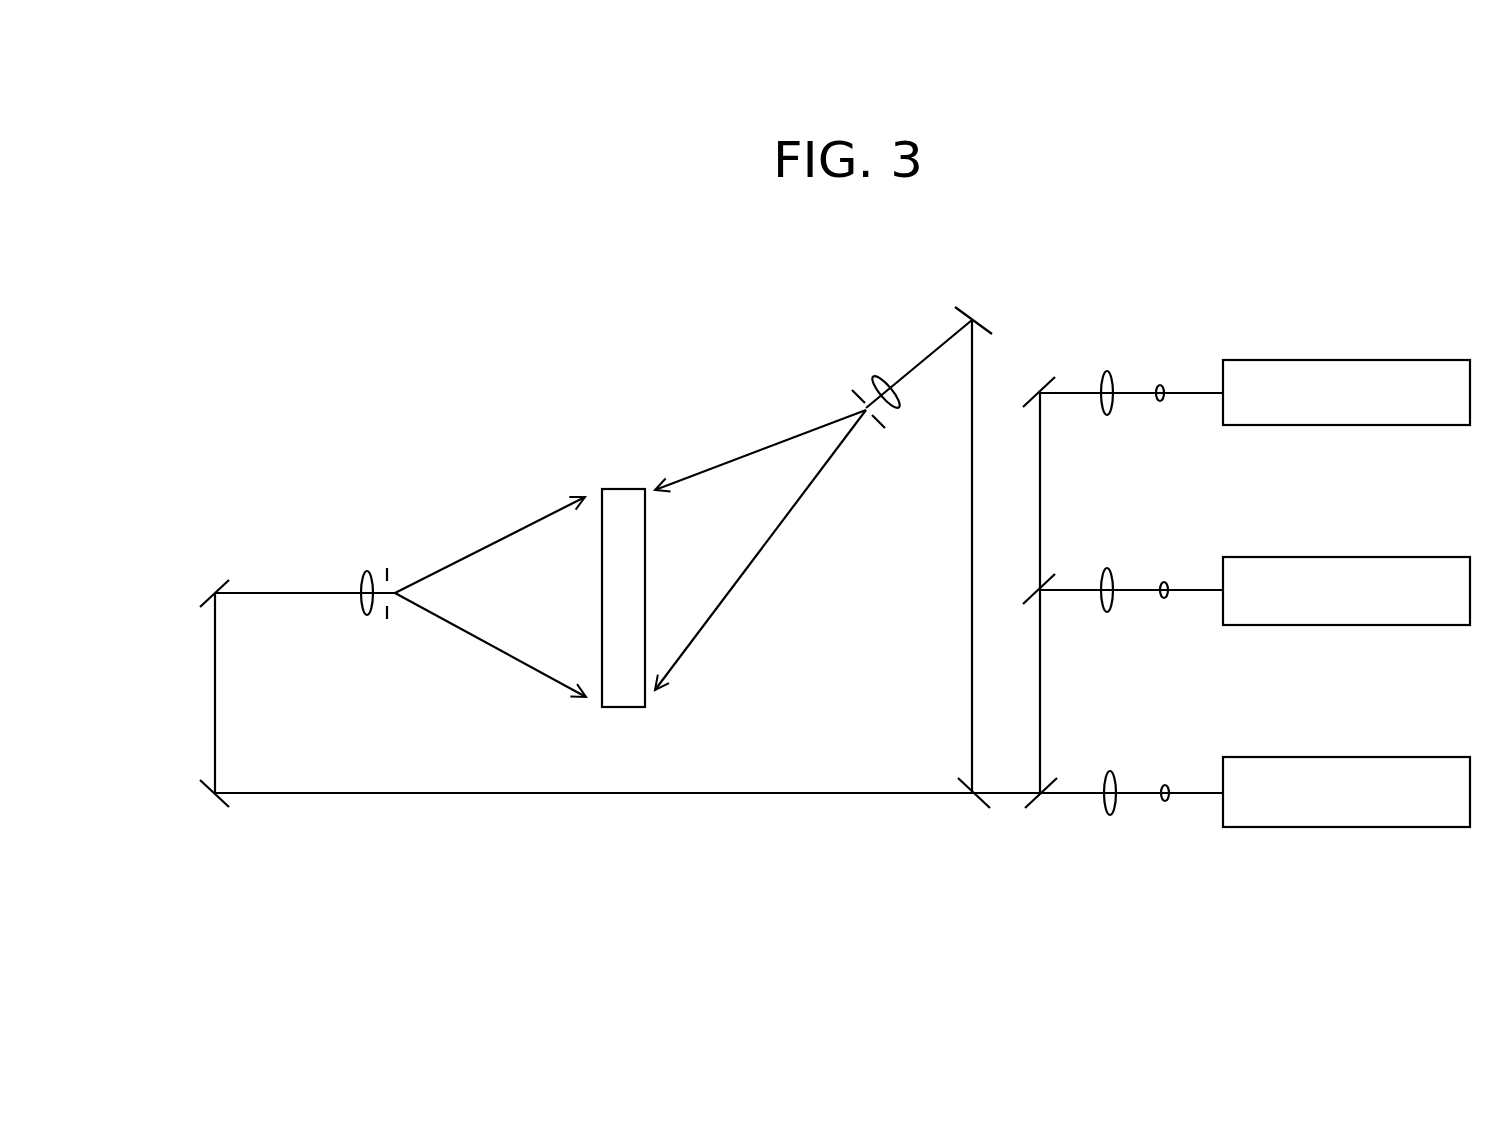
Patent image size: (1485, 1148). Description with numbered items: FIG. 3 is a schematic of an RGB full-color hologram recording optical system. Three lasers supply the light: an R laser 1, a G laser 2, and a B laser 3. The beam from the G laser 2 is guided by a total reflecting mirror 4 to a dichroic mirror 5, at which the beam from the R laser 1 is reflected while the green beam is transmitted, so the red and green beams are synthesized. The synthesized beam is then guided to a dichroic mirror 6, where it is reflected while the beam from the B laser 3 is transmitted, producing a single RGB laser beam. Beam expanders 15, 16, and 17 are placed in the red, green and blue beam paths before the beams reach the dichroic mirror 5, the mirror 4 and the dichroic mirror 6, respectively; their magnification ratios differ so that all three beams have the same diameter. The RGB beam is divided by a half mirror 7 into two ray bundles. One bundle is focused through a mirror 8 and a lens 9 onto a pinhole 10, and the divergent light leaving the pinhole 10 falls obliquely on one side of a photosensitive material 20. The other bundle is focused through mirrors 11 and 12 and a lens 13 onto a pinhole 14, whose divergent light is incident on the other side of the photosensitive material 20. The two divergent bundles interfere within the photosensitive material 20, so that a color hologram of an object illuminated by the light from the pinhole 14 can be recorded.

The R laser 1 is at (1351, 557).
The G laser 2 is at (1350, 360).
The B laser 3 is at (1355, 757).
The total reflecting mirror 4 is at (1040, 385).
The dichroic mirror 5 is at (1038, 592).
The dichroic mirror 6 is at (1040, 785).
The half mirror 7 is at (975, 803).
The mirror 8 is at (973, 317).
The lens 9 is at (878, 380).
The pinhole 10 is at (873, 417).
The mirror 11 is at (223, 808).
The mirror 12 is at (228, 577).
The lens 13 is at (361, 612).
The pinhole 14 is at (389, 567).
The beam expander 15 is at (1127, 573).
The beam expander 16 is at (1130, 372).
The beam expander 17 is at (1130, 775).
The photosensitive material 20 is at (620, 707).